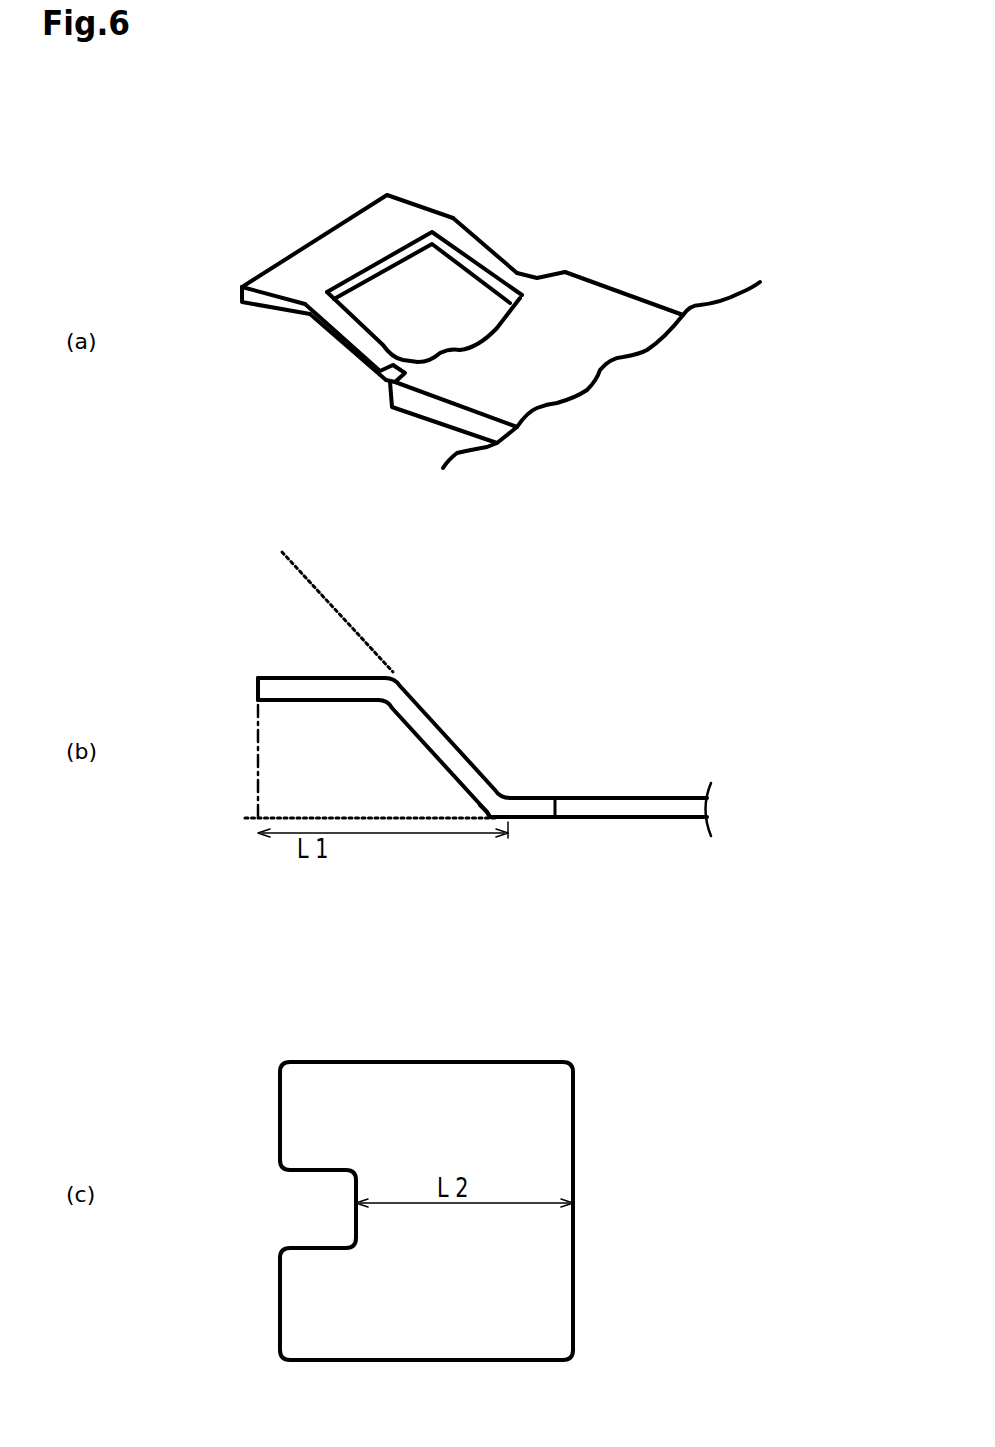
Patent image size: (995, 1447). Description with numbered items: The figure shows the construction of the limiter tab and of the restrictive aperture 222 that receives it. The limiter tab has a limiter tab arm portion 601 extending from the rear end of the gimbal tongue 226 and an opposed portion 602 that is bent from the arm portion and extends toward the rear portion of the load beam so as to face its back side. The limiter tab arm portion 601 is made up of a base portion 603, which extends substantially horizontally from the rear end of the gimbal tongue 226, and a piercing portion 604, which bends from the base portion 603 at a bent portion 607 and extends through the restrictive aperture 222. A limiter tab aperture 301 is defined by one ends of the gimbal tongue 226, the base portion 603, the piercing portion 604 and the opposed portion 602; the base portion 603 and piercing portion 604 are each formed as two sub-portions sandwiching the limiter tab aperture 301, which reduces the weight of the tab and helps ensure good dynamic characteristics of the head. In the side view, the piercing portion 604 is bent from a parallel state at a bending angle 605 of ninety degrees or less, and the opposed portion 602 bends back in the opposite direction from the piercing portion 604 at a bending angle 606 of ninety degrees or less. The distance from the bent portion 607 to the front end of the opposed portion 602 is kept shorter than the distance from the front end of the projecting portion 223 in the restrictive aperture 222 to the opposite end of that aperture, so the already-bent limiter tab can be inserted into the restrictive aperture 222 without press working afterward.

The opposed portion 602 is at (317, 258).
The piercing portion 604 is at (472, 247).
The base portion 603 is at (537, 278).
The limiter tab arm portion 601 is at (423, 528).
The limiter tab aperture 301 is at (437, 287).
The gimbal tongue 226 is at (620, 302).
The bending angle of the opposed portion 606 is at (353, 628).
The bending angle 605 is at (438, 760).
The bent portion 607 is at (500, 808).
The restrictive aperture 222 is at (347, 1085).
The projecting portion 223 is at (308, 1227).